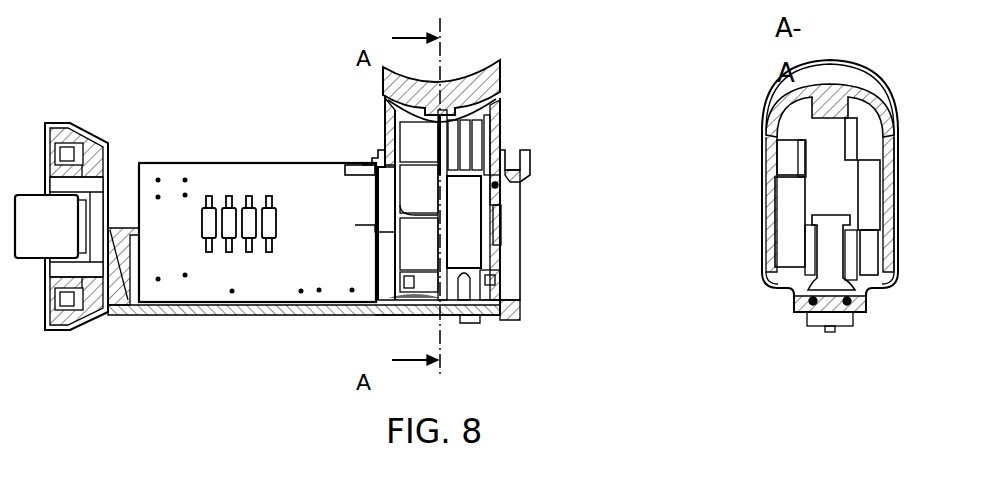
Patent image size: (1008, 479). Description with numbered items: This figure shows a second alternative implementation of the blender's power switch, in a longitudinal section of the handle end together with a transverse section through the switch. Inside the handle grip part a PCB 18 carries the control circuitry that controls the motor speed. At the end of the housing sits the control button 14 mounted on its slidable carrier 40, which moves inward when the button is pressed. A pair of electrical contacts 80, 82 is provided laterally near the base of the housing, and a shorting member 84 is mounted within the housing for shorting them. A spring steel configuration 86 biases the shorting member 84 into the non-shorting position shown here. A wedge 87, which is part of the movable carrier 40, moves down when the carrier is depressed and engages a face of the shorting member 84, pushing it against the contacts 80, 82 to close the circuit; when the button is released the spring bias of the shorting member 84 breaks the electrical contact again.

The control button 14 is at (457, 78).
The PCB 18 is at (275, 163).
The slidable carrier 40 is at (500, 100).
The electrical contact 80 is at (855, 312).
The electrical contact 82 is at (497, 322).
The shorting member 84 is at (478, 268).
The spring steel configuration 86 is at (493, 195).
The wedge 87 is at (496, 186).